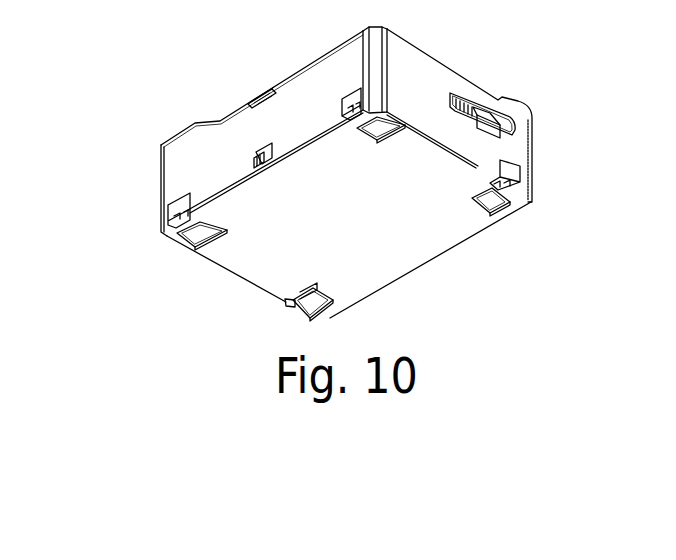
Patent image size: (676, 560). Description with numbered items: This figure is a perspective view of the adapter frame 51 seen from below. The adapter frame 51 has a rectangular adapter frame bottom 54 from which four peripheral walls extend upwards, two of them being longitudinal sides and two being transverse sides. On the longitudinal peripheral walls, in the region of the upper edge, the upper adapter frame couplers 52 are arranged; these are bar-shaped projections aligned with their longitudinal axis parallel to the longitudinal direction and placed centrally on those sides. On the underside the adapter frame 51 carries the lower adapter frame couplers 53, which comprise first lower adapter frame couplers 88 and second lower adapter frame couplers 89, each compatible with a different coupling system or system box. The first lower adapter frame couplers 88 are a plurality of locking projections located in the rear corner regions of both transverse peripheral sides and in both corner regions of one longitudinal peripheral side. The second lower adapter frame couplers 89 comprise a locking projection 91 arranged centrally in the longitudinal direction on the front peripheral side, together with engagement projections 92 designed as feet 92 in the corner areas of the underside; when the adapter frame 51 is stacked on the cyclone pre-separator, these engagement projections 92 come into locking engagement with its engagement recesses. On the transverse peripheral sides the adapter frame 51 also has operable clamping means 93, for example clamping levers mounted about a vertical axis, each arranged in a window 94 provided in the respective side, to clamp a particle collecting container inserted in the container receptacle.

The adapter frame 51 is at (543, 121).
The upper adapter frame coupler 52 is at (253, 103).
The lower adapter frame couplers 53 is at (346, 172).
The adapter frame bottom 54 is at (402, 242).
The first lower adapter frame coupler 88 is at (353, 117).
The second lower adapter frame coupler 89 is at (346, 172).
The locking projection 91 is at (250, 160).
The engagement projection 92 is at (380, 132).
The clamping means 93 is at (490, 125).
The window 94 is at (462, 102).